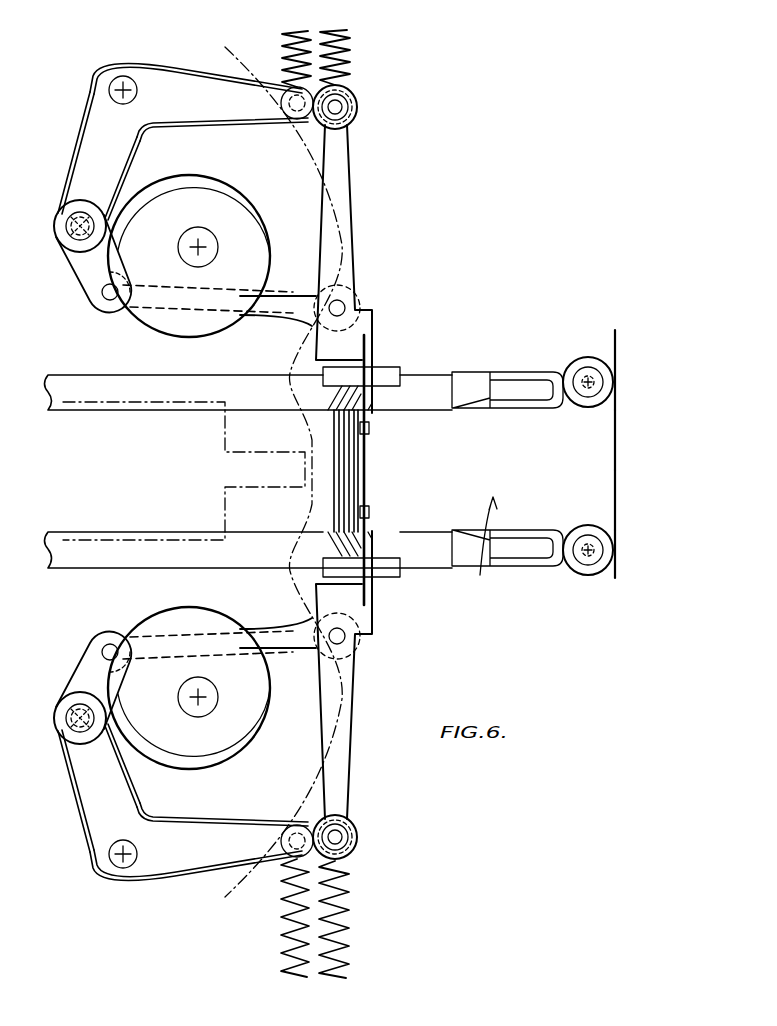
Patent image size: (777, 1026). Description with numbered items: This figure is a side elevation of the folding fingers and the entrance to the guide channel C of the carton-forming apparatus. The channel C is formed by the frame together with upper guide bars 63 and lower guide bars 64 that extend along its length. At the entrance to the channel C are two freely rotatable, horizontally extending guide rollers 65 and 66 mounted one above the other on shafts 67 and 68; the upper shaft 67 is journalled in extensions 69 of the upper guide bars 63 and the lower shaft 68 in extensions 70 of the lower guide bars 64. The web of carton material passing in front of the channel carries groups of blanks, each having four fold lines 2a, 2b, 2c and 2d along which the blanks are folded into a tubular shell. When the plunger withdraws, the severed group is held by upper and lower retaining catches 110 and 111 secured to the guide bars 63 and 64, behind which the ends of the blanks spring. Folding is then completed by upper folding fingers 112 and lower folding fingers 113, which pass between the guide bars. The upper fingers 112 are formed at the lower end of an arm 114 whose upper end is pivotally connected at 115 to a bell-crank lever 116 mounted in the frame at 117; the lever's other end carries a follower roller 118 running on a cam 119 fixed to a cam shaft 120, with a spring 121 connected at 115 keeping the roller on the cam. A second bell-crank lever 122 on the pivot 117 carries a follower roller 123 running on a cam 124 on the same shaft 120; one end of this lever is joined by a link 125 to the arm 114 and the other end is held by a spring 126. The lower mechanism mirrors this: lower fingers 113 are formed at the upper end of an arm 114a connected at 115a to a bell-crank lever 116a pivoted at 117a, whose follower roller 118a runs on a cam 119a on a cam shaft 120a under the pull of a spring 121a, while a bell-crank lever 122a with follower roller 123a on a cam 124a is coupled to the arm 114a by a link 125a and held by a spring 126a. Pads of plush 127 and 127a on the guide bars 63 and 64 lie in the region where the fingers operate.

The upper guide bars 63 is at (126, 385).
The lower guide bars 64 is at (126, 545).
The upper guide roller 65 is at (591, 368).
The lower guide roller 66 is at (586, 572).
The upper shaft 67 is at (583, 375).
The lower shaft 68 is at (588, 530).
The extensions of the upper guide bars 69 is at (573, 368).
The extensions of the lower guide bars 70 is at (568, 565).
The fold line 2a is at (615, 563).
The fold line 2b is at (614, 523).
The fold line 2c is at (614, 441).
The fold line 2d is at (614, 406).
The guide channel C is at (486, 548).
The upper retaining catch 110 is at (463, 388).
The lower retaining catch 111 is at (392, 548).
The upper folding fingers 112 is at (370, 430).
The lower folding fingers 113 is at (370, 512).
The arm 114 is at (342, 150).
The pivotal connection 115 is at (343, 106).
The bell-crank lever 116 is at (168, 72).
The pivot 117 is at (138, 91).
The follower roller 118 is at (112, 155).
The cam 119 is at (247, 265).
The cam shaft 120 is at (210, 242).
The spring 121 is at (350, 55).
The bell-crank lever 122 is at (265, 128).
The follower roller 123 is at (106, 256).
The cam 124 is at (258, 198).
The link 125 is at (272, 305).
The spring 126 is at (284, 72).
The pad of plush 127 is at (394, 386).
The arm 114a is at (338, 702).
The pivotal connection 115a is at (343, 839).
The bell-crank lever 116a is at (216, 865).
The pivot 117a is at (138, 855).
The follower roller 118a is at (88, 740).
The cam 119a is at (168, 618).
The cam shaft 120a is at (200, 712).
The spring 121a is at (352, 918).
The bell-crank lever 122a is at (255, 822).
The follower roller 123a is at (74, 690).
The cam 124a is at (310, 745).
The link 125a is at (262, 630).
The spring 126a is at (280, 934).
The pad of plush 127a is at (398, 560).